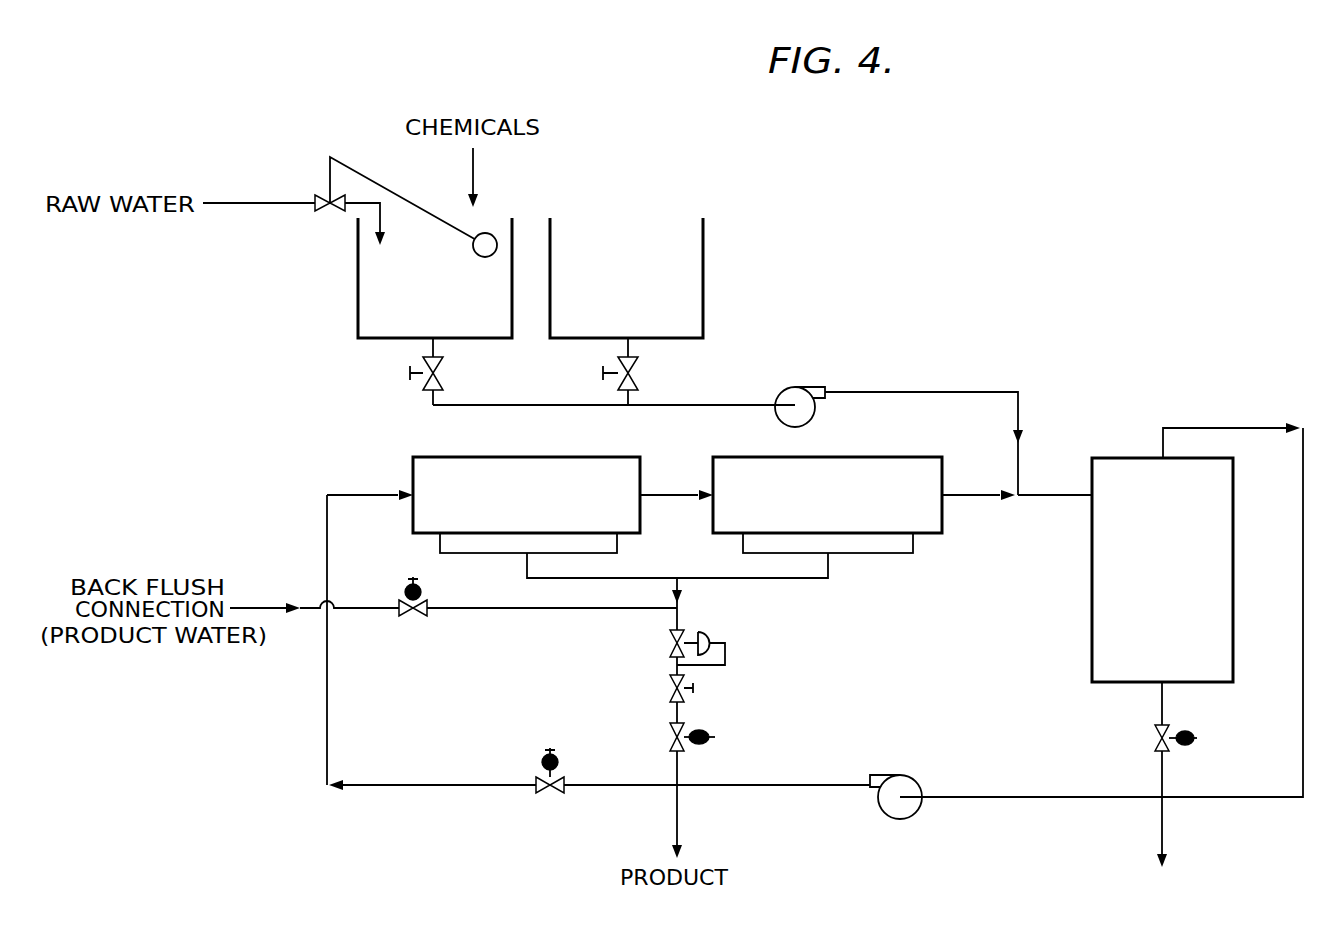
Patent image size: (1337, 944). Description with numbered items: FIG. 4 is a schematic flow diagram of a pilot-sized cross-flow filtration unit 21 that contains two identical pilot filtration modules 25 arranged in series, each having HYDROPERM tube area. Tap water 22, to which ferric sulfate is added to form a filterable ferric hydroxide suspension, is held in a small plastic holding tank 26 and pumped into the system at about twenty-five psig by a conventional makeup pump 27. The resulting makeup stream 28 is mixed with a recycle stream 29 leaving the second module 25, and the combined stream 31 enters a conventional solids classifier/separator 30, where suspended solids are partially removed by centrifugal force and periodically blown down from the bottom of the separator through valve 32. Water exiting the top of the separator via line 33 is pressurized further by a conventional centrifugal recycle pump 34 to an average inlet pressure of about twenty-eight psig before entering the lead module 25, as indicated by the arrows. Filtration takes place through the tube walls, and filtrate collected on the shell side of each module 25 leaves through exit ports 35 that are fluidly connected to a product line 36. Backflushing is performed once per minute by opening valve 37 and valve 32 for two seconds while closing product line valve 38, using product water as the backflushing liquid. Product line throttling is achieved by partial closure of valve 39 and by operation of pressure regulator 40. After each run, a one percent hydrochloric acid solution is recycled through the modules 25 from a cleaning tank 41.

The pilot-sized unit 21 is at (1107, 300).
The tap water 22 is at (258, 205).
The pilot filtration modules 25 is at (725, 476).
The holding tank 26 is at (358, 290).
The makeup pump 27 is at (812, 415).
The makeup stream 28 is at (1022, 400).
The recycle stream 29 is at (967, 495).
The solids classifier/separator 30 is at (1235, 508).
The combined stream 31 is at (1058, 495).
The valve 32 is at (1165, 752).
The line 33 is at (1222, 428).
The recycle pump 34 is at (908, 818).
The exit ports 35 is at (440, 540).
The product line 36 is at (675, 608).
The valve 37 is at (427, 614).
The product line valve 38 is at (672, 752).
The valve 39 is at (672, 702).
The pressure regulator 40 is at (712, 633).
The cleaning tank 41 is at (704, 272).